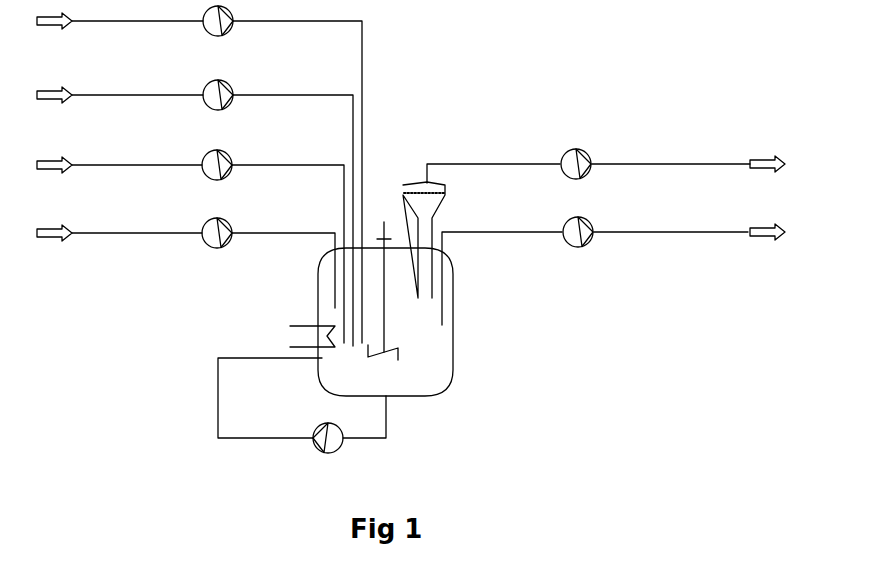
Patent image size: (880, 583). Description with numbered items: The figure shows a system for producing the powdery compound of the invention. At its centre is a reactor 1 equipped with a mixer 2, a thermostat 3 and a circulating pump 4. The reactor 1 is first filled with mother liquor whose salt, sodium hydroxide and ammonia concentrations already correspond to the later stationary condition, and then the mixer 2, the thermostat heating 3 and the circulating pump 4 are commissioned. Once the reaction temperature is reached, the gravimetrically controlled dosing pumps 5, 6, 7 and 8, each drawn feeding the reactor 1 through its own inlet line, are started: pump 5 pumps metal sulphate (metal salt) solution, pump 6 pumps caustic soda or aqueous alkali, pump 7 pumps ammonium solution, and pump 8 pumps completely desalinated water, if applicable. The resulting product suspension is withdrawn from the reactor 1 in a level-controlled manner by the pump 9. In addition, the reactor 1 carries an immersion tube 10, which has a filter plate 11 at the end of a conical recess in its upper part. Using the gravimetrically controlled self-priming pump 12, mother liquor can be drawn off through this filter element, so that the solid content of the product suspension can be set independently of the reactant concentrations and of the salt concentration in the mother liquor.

The reactor 1 is at (376, 322).
The mixer 2 is at (384, 344).
The thermostat 3 is at (312, 336).
The circulating pump 4 is at (302, 418).
The dosing pump 5 is at (199, 174).
The dosing pump 6 is at (195, 213).
The dosing pump 7 is at (190, 246).
The dosing pump 8 is at (186, 263).
The pump 9 is at (613, 271).
The immersion tube 10 is at (396, 287).
The filter plate 11 is at (424, 240).
The pump 12 is at (606, 176).